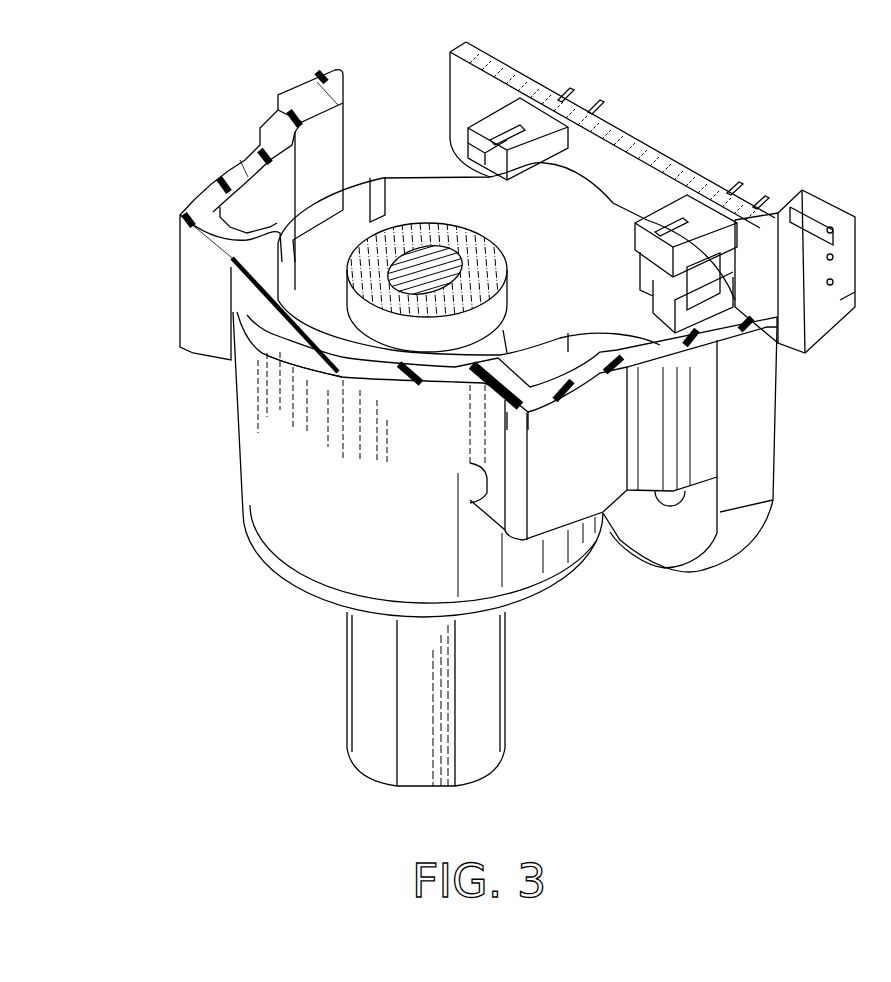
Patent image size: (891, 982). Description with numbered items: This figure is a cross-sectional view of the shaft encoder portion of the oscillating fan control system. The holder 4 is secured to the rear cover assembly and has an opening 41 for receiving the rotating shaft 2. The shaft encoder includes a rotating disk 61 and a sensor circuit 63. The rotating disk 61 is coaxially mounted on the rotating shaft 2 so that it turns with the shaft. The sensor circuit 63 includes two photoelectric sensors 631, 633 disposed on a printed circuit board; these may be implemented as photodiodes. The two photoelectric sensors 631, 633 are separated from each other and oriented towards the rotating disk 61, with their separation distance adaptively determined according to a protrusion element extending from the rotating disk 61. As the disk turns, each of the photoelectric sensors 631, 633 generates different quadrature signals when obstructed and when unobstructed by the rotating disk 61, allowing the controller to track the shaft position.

The rotating shaft 2 is at (482, 683).
The holder 4 is at (285, 330).
The opening 41 is at (307, 307).
The rotating disk 61 is at (565, 229).
The sensor circuit 63 is at (670, 167).
The photoelectric sensor 631 is at (533, 116).
The photoelectric sensor 633 is at (697, 208).